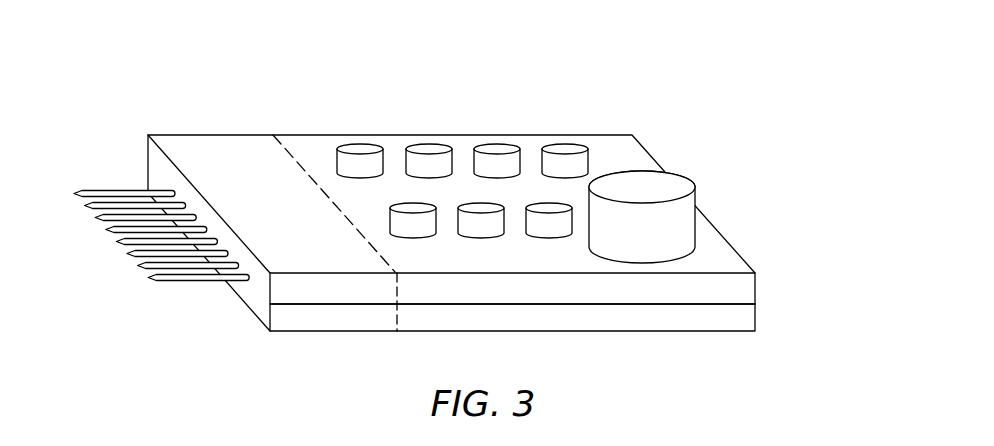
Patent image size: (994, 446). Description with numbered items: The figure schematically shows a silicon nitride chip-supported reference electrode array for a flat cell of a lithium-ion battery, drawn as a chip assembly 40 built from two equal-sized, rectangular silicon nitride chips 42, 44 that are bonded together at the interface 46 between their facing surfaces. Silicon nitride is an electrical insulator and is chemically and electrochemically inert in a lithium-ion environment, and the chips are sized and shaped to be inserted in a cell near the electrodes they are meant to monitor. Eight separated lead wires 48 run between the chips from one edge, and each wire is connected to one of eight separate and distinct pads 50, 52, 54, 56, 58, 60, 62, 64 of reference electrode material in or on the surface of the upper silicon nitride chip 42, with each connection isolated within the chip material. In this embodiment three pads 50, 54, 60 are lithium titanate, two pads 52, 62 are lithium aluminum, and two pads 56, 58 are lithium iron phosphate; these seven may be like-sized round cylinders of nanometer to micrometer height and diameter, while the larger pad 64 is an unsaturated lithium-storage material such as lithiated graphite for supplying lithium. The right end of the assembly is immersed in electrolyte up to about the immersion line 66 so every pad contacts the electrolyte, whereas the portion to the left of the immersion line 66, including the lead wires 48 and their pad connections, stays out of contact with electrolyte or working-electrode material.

The chip assembly 40 is at (445, 198).
The silicon nitride chip 42 is at (755, 287).
The silicon nitride chip 44 is at (755, 317).
The interface 46 is at (495, 304).
The lead wires 48 is at (119, 270).
The pad of reference electrode material 50 is at (357, 148).
The pad of reference electrode material 52 is at (427, 148).
The pad of reference electrode material 54 is at (495, 148).
The pad of reference electrode material 56 is at (565, 148).
The pad of reference electrode material 58 is at (408, 228).
The pad of reference electrode material 60 is at (474, 228).
The pad of reference electrode material 62 is at (552, 228).
The pad of unsaturated Li-storage material 64 is at (677, 185).
The immersion line 66 is at (293, 153).